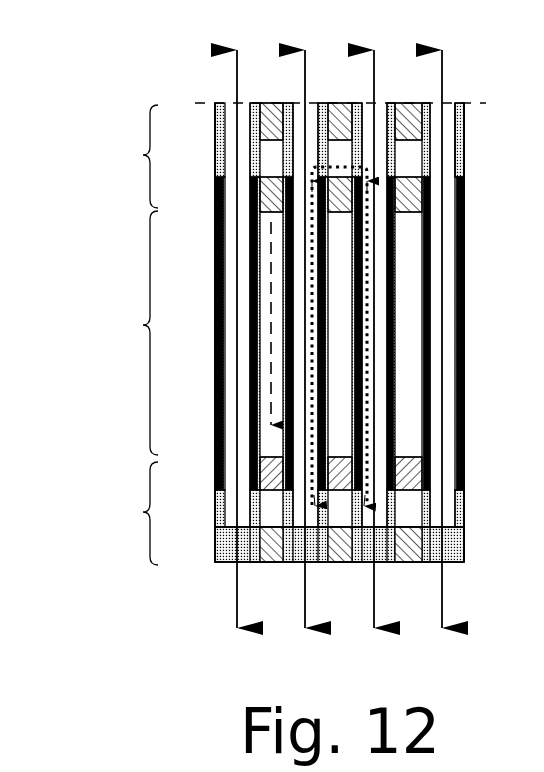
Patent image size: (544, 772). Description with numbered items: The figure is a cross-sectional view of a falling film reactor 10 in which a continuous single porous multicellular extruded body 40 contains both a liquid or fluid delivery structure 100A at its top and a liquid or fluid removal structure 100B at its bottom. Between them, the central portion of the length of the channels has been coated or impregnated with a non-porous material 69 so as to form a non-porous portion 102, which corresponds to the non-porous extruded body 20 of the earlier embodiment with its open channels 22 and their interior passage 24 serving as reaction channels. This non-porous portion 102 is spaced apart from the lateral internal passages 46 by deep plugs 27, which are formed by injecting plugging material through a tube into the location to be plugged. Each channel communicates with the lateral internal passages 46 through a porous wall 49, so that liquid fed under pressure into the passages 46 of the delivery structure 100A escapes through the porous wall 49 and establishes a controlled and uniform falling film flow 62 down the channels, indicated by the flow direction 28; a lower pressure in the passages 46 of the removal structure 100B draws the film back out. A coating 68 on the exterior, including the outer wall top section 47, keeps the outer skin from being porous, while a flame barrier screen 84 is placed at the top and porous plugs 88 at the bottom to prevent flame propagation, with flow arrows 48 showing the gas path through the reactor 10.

The reactor 10 is at (312, 348).
The non-porous extruded body 20 is at (218, 398).
The open channels 22 is at (452, 262).
The tube interior passage 24 is at (408, 348).
The deep plugs 27 is at (283, 141).
The fluid flow direction 28 is at (272, 322).
The porous multicellular extruded body 40 is at (218, 158).
The lateral internal passages 46 is at (281, 135).
The outer wall top section 47 is at (453, 163).
The flow arrow 48 is at (444, 90).
The porous wall 49 is at (404, 130).
The falling film flow 62 is at (338, 150).
The coating 68 is at (465, 122).
The non-porous material 69 is at (463, 298).
The flame barrier screen 84 is at (212, 103).
The porous plugs 88 is at (226, 563).
The fluid delivery structure 100A is at (116, 156).
The fluid removal structure 100B is at (116, 513).
The non-porous portion 102 is at (117, 333).